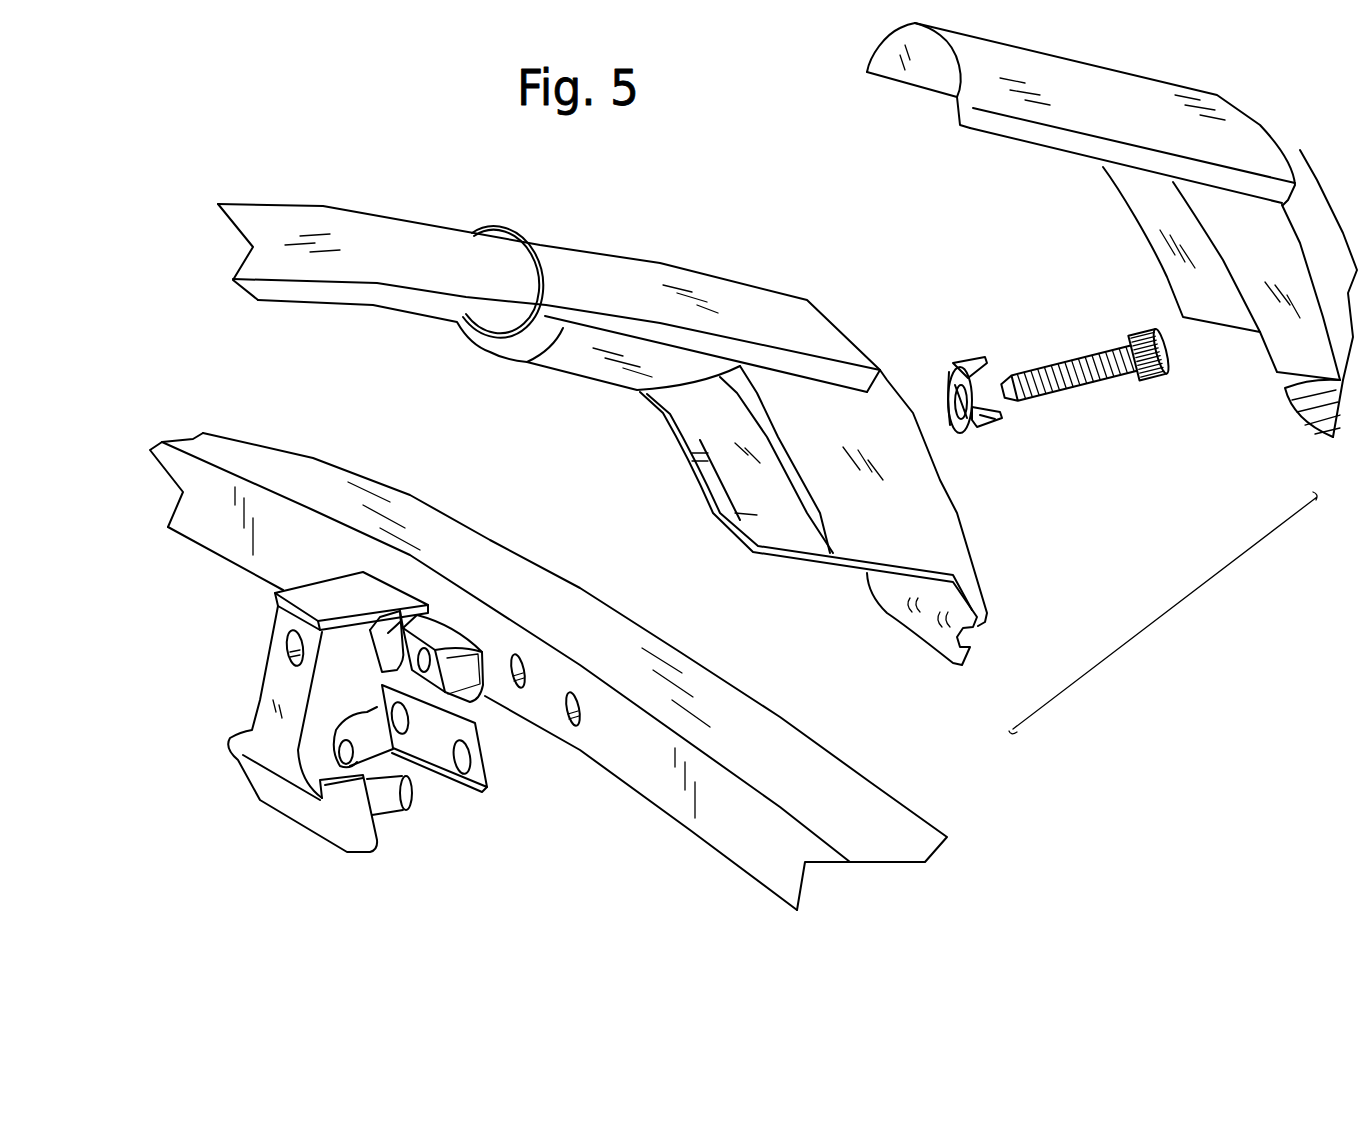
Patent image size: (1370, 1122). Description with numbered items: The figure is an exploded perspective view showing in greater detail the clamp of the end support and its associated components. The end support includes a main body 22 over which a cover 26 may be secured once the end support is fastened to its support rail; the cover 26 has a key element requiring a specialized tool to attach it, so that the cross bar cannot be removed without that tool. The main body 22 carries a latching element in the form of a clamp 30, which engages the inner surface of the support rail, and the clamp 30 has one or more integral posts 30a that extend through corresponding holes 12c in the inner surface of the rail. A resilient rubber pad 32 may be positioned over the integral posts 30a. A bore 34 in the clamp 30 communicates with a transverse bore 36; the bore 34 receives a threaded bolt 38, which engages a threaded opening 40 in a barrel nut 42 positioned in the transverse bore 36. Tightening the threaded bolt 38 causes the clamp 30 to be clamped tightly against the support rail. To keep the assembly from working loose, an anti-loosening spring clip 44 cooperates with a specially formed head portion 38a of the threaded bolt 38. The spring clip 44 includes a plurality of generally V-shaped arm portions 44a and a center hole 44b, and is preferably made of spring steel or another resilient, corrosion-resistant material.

The main body 22 is at (977, 637).
The cover 26 is at (1038, 133).
The threaded bolt 38 is at (1067, 395).
The head portion 38a is at (1163, 383).
The spring clip 44 is at (985, 432).
The V-shaped arm portions 44a is at (967, 353).
The center hole 44b is at (947, 380).
The holes 12c is at (567, 697).
The clamp 30 is at (265, 687).
The integral posts 30a is at (400, 805).
The rubber pad 32 is at (485, 772).
The bore 34 is at (287, 647).
The transverse bore 36 is at (385, 652).
The threaded opening 40 is at (422, 650).
The barrel nut 42 is at (465, 678).